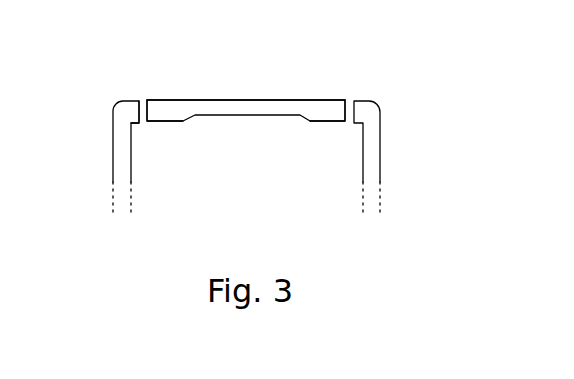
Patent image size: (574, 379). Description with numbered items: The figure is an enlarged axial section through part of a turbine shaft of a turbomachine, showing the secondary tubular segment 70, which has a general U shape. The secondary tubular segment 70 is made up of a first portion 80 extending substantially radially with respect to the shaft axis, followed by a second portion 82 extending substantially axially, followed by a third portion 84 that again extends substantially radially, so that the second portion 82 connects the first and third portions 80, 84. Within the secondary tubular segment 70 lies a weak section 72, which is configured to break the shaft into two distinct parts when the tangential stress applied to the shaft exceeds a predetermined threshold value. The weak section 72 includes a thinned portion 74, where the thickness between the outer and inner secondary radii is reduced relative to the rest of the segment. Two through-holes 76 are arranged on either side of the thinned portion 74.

The secondary tubular segment 70 is at (241, 128).
The weak section 72 is at (260, 70).
The thinned portion 74 is at (225, 102).
The through-holes 76 is at (145, 127).
The first portion 80 is at (123, 167).
The second portion 82 is at (158, 101).
The third portion 84 is at (373, 172).